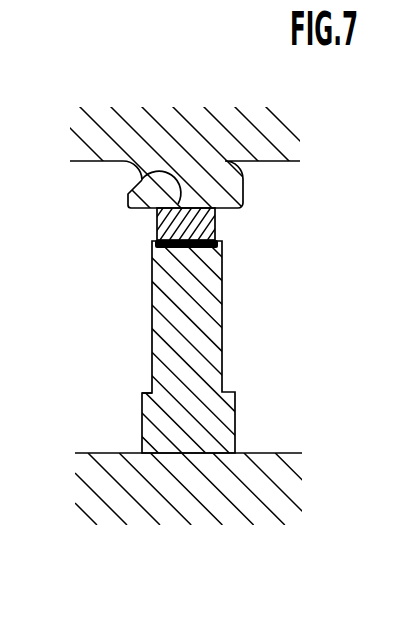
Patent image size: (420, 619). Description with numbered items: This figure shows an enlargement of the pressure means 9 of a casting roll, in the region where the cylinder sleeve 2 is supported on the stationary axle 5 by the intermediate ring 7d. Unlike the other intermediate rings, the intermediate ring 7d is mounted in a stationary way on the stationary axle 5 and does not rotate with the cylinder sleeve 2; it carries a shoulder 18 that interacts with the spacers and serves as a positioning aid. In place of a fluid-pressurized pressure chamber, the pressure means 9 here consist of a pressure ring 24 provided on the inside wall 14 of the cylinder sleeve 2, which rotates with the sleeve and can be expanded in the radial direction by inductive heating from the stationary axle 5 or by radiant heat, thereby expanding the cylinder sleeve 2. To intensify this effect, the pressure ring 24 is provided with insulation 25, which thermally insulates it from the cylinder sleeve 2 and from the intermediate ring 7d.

The cylinder sleeve 2 is at (140, 135).
The inside wall 14 is at (142, 178).
The insulation 25 is at (216, 226).
The pressure ring 24 is at (156, 237).
The pressure means 9 is at (140, 248).
The intermediate ring 7d is at (180, 332).
The shoulder 18 is at (145, 393).
The axle 5 is at (200, 487).